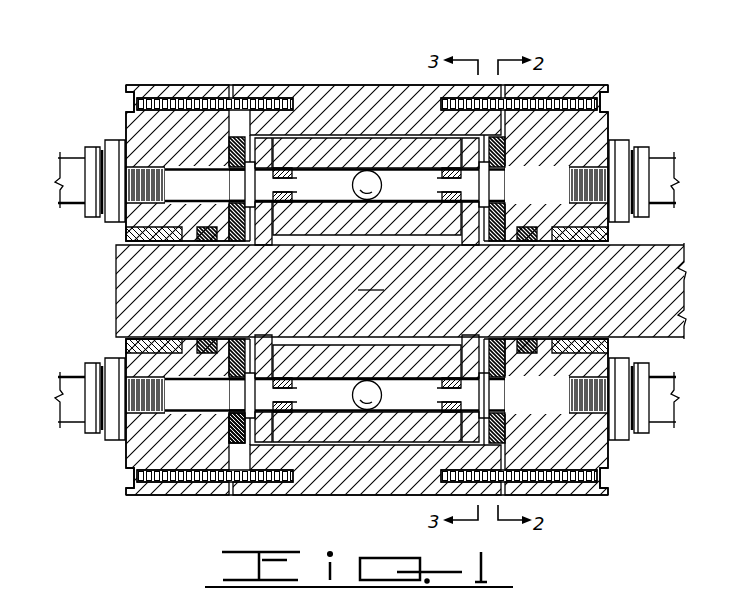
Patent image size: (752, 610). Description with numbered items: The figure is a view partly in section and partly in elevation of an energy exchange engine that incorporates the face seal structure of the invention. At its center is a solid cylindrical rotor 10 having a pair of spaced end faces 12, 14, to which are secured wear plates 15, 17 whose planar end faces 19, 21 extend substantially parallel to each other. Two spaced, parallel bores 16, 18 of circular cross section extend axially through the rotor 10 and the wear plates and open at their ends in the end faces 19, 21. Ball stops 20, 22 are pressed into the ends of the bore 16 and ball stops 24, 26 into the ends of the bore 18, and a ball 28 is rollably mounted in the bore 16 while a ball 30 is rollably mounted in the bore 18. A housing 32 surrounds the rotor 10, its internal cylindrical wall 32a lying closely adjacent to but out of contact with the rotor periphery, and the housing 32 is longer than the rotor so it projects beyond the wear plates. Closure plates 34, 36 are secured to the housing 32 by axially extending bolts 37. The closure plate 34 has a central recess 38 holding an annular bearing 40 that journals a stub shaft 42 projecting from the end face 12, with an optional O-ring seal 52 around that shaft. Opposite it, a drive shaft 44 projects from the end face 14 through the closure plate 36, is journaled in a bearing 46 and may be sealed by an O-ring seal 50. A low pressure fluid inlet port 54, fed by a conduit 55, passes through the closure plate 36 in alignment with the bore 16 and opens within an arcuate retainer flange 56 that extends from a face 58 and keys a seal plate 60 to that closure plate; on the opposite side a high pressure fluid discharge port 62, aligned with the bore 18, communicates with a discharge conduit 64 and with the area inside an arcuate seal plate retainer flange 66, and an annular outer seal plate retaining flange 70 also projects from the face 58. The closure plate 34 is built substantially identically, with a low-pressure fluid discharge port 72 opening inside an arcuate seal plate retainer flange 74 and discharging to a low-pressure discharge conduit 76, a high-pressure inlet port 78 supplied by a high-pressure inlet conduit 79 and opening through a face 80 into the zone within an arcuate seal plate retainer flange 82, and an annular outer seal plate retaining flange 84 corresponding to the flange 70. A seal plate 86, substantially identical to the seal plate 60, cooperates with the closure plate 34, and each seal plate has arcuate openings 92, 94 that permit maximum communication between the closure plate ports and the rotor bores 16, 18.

The rotor 10 is at (367, 290).
The end face 12 is at (262, 232).
The end face 14 is at (462, 229).
The wear plate 15 is at (282, 350).
The bore 16 is at (415, 378).
The wear plate 17 is at (460, 335).
The bore 18 is at (398, 192).
The end face 19 is at (272, 335).
The ball stop 20 is at (282, 377).
The end face 21 is at (484, 340).
The ball stop 22 is at (452, 372).
The ball stop 24 is at (285, 165).
The ball stop 26 is at (450, 165).
The ball 28 is at (368, 378).
The ball 30 is at (357, 200).
The housing 32 is at (345, 85).
The internal cylindrical wall 32a is at (393, 440).
The closure plate 34 is at (196, 85).
The closure plate 36 is at (572, 86).
The bolts 37 is at (127, 98).
The central recess 38 is at (160, 354).
The annular bearing 40 is at (148, 336).
The stub shaft 42 is at (128, 288).
The drive shaft 44 is at (665, 244).
The bearing 46 is at (582, 247).
The O-ring seal 50 is at (522, 247).
The O-ring seal 52 is at (202, 243).
The low pressure fluid inlet port 54 is at (546, 403).
The conduit 55 is at (665, 383).
The arcuate retainer flange 56 is at (508, 421).
The face 58 is at (510, 432).
The seal plate 60 is at (483, 460).
The high pressure fluid discharge port 62 is at (552, 172).
The high-pressure fluid discharge conduit 64 is at (655, 172).
The arcuate seal plate retainer flange 66 is at (510, 172).
The annular outer seal plate retaining flange 70 is at (497, 121).
The low-pressure fluid discharge port 72 is at (164, 419).
The arcuate seal plate retainer flange 74 is at (225, 392).
The low-pressure discharge conduit 76 is at (74, 412).
The high-pressure inlet port 78 is at (185, 182).
The high-pressure inlet conduit 79 is at (72, 198).
The face 80 is at (278, 335).
The arcuate seal plate retainer flange 82 is at (230, 193).
The annular outer seal plate retaining flange 84 is at (247, 128).
The seal plate 86 is at (245, 450).
The arcuate opening 92 is at (278, 184).
The arcuate opening 94 is at (283, 398).